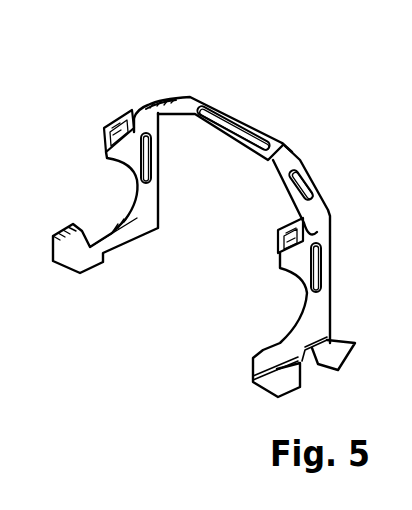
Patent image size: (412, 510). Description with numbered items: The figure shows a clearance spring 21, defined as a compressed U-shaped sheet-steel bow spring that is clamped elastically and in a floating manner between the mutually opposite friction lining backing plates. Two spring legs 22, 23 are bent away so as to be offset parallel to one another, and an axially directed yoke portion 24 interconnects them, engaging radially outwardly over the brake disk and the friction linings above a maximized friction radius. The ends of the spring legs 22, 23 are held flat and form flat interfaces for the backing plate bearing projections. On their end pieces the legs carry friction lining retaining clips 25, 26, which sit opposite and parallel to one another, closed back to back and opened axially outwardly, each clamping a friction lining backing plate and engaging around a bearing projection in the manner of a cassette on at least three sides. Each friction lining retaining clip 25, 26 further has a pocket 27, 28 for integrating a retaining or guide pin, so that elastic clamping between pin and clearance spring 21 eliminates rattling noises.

The clearance spring 21 is at (225, 102).
The spring leg 22 is at (298, 184).
The spring leg 23 is at (150, 103).
The yoke portion 24 is at (243, 130).
The friction lining retaining clip 25 is at (305, 268).
The friction lining retaining clip 26 is at (141, 217).
The pocket 27 is at (300, 312).
The pocket 28 is at (130, 177).